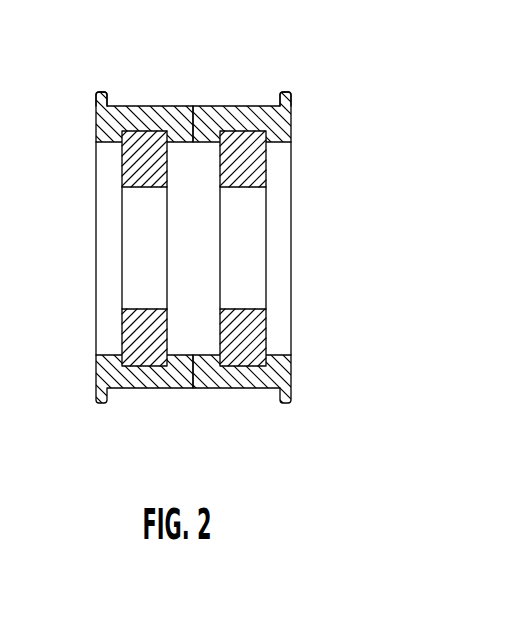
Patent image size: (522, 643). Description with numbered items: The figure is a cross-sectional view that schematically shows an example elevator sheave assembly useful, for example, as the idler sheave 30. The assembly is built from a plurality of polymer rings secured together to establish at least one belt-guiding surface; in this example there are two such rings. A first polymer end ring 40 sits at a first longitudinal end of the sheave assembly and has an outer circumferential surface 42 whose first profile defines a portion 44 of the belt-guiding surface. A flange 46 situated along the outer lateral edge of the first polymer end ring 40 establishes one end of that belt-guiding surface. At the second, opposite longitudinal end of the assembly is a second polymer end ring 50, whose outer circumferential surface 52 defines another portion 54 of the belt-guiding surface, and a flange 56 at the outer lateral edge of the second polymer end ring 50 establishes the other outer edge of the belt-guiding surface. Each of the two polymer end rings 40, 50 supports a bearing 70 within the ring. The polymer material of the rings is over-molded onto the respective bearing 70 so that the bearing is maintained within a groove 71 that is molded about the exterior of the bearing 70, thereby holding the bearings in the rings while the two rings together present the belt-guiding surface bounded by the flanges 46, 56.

The idler sheave 30 is at (205, 237).
The first polymer end ring 40 is at (115, 242).
The outer circumferential surface 42 is at (153, 389).
The portion of belt-guiding surface 44 is at (162, 107).
The flange 46 is at (102, 94).
The second polymer end ring 50 is at (268, 242).
The outer circumferential surface 52 is at (240, 388).
The portion of belt-guiding surface 54 is at (242, 107).
The flange 56 is at (286, 93).
The bearing 70 is at (126, 186).
The groove 71 is at (126, 134).